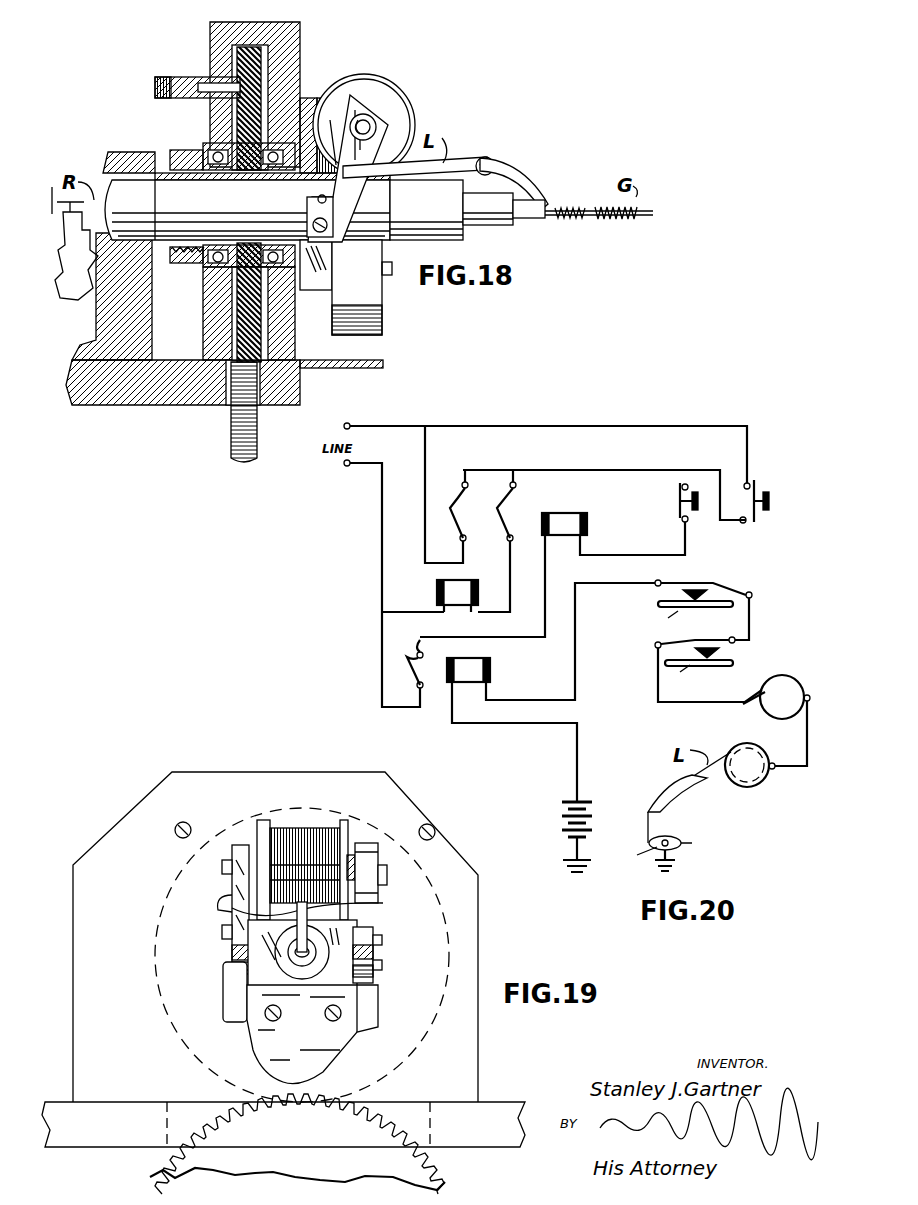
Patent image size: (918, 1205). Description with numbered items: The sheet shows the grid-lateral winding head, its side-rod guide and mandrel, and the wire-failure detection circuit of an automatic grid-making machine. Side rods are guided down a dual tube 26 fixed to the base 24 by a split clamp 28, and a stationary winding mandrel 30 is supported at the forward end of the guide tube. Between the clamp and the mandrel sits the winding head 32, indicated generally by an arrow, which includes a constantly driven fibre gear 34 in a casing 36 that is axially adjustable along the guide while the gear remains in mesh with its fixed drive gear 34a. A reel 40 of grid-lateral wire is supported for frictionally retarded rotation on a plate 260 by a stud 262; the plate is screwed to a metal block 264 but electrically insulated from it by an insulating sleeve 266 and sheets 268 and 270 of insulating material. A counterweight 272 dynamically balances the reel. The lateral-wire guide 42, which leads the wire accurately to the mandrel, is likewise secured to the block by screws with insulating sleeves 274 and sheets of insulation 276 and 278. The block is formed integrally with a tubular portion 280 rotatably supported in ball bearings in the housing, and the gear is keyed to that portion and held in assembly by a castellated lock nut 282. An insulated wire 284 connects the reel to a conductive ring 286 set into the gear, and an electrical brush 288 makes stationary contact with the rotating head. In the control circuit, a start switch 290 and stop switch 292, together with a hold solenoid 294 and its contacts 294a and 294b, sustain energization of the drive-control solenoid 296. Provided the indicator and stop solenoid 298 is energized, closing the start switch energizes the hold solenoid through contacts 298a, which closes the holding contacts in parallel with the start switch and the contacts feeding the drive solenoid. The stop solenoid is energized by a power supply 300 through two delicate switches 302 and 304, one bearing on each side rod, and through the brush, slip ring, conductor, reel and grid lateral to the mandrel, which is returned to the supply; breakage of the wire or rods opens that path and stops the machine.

In FIG. 18, the base 24 is at (121, 405).
In FIG. 19, the base 24 is at (130, 1142).
In FIG. 18, the dual tube 26 is at (240, 204).
In FIG. 18, the split clamp 28 is at (137, 152).
In FIG. 18, the winding mandrel 30 is at (542, 215).
In FIG. 20, the winding mandrel 30 is at (666, 836).
In FIG. 19, the winding mandrel 30 is at (290, 961).
In FIG. 18, the winding head 32 is at (432, 329).
In FIG. 18, the gear 34 is at (236, 77).
In FIG. 19, the gear 34 is at (423, 862).
In FIG. 18, the drive gear 34a is at (230, 438).
In FIG. 19, the drive gear 34a is at (438, 1177).
In FIG. 18, the casing 36 is at (300, 48).
In FIG. 19, the casing 36 is at (392, 800).
In FIG. 18, the reel 40 is at (393, 85).
In FIG. 20, the reel 40 is at (742, 780).
In FIG. 19, the reel 40 is at (305, 833).
In FIG. 18, the lateral-wire guide 42 is at (521, 167).
In FIG. 20, the lateral-wire guide 42 is at (673, 778).
In FIG. 19, the lateral-wire guide 42 is at (383, 903).
In FIG. 18, the plate 260 is at (343, 117).
In FIG. 19, the plate 260 is at (262, 860).
In FIG. 18, the stud 262 is at (377, 127).
In FIG. 19, the stud 262 is at (222, 866).
In FIG. 18, the metal block 264 is at (320, 278).
In FIG. 19, the metal block 264 is at (368, 997).
In FIG. 19, the insulating sleeve 266 is at (218, 965).
In FIG. 19, the sheet of insulating material 268 is at (222, 935).
In FIG. 18, the sheet of insulating material 270 is at (316, 100).
In FIG. 19, the sheet of insulating material 270 is at (222, 920).
In FIG. 18, the counterweight 272 is at (375, 276).
In FIG. 19, the counterweight 272 is at (295, 1046).
In FIG. 19, the insulating sleeves 274 is at (372, 952).
In FIG. 19, the sheet of insulation 276 is at (350, 912).
In FIG. 19, the sheet of insulation 278 is at (362, 985).
In FIG. 18, the tubular portion 280 is at (204, 150).
In FIG. 18, the castellated lock nut 282 is at (178, 262).
In FIG. 18, the insulated wire 284 is at (240, 128).
In FIG. 20, the insulated wire 284 is at (813, 757).
In FIG. 18, the conductive ring 286 is at (235, 317).
In FIG. 20, the conductive ring 286 is at (813, 652).
In FIG. 18, the electrical brush 288 is at (172, 66).
In FIG. 20, the electrical brush 288 is at (743, 702).
In FIG. 20, the start switch 290 is at (755, 476).
In FIG. 20, the stop switch 292 is at (680, 525).
In FIG. 20, the hold solenoid 294 is at (578, 518).
In FIG. 20, the contacts 294a is at (465, 480).
In FIG. 20, the contacts 294b is at (495, 453).
In FIG. 20, the drive-control solenoid 296 is at (497, 570).
In FIG. 20, the indicator and stop solenoid 298 is at (488, 669).
In FIG. 20, the contacts 298a is at (416, 650).
In FIG. 20, the power supply 300 is at (555, 825).
In FIG. 18, the delicate switch 302 is at (76, 264).
In FIG. 20, the delicate switch 302 is at (713, 583).
In FIG. 20, the delicate switch 304 is at (683, 640).